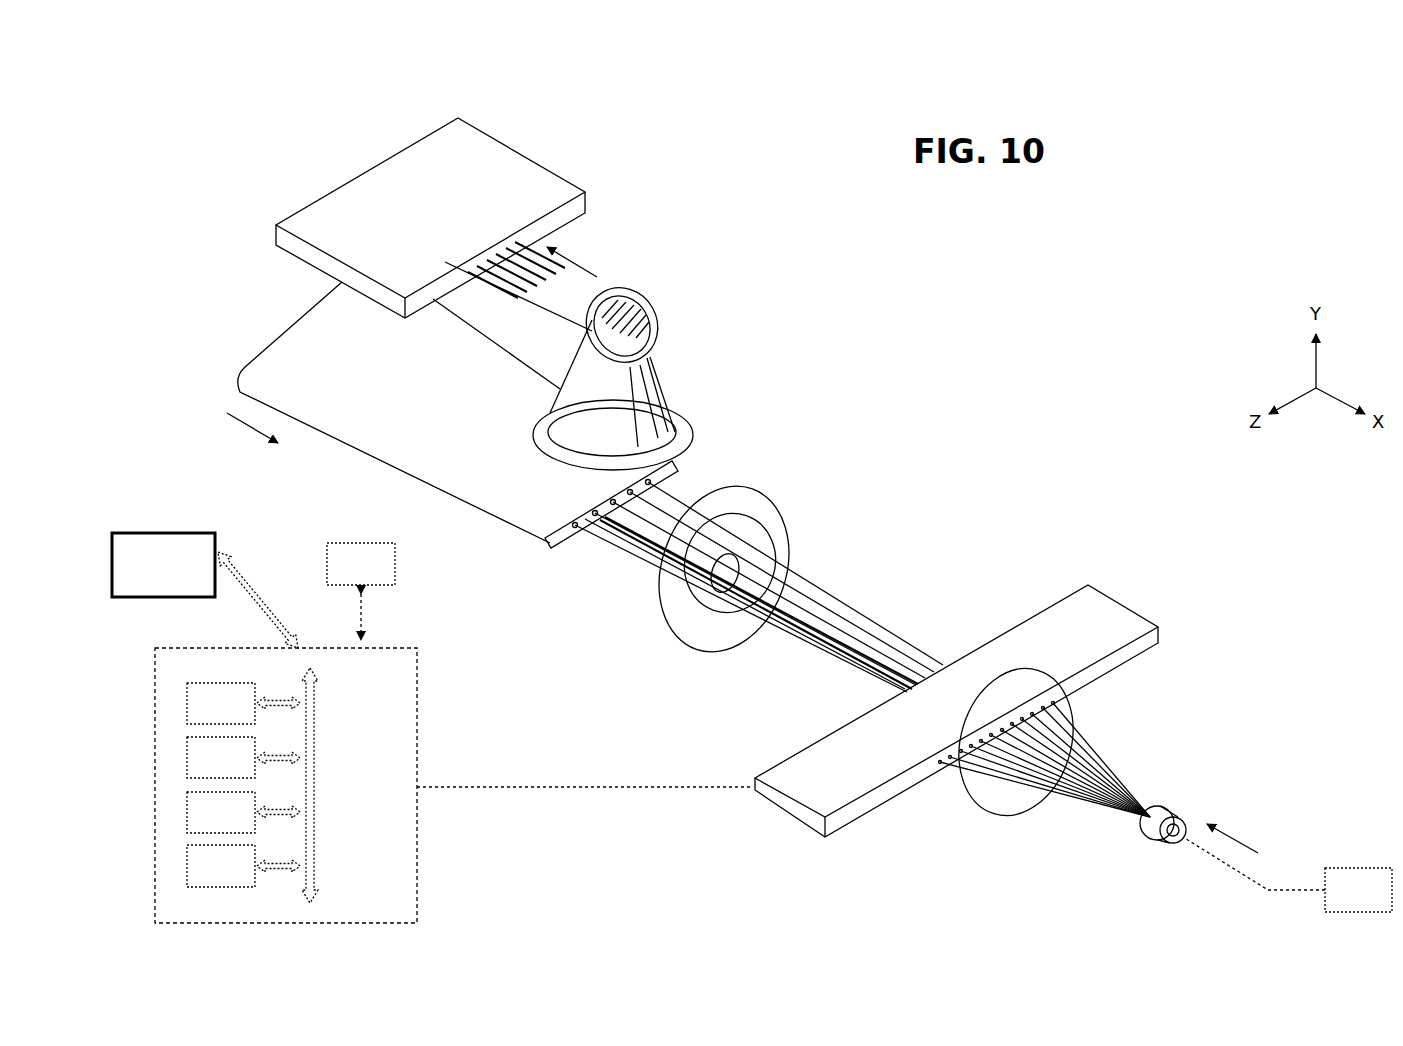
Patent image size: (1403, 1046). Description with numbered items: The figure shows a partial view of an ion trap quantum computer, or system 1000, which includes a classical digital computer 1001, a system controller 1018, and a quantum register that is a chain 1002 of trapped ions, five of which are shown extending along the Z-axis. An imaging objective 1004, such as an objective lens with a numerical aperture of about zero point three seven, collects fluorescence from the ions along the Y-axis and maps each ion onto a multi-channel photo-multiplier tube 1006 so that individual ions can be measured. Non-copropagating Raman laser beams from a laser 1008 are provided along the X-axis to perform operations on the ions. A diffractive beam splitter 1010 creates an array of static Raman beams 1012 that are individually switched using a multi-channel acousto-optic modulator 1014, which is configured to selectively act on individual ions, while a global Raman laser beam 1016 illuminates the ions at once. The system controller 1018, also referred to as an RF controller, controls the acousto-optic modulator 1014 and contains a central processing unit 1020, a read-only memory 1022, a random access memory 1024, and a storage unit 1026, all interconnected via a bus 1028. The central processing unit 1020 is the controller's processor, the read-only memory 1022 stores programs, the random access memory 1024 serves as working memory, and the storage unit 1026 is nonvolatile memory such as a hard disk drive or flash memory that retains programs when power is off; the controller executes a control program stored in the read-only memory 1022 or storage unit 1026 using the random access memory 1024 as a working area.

The system 1000 is at (914, 404).
The classical computer 1001 is at (207, 593).
The chain of trapped ions 1002 is at (592, 553).
The imaging objective 1004 is at (666, 366).
The multi-channel photo-multiplier tube 1006 is at (524, 155).
The laser 1008 is at (1287, 874).
The diffractive beam splitter 1010 is at (1165, 805).
The array of static Raman beams 1012 is at (680, 652).
The multi-channel acousto-optic modulator 1014 is at (1128, 602).
The global Raman laser beam 1016 is at (300, 473).
The system controller 1018 is at (243, 648).
The central processing unit 1020 is at (243, 703).
The read-only memory 1022 is at (243, 757).
The random access memory 1024 is at (243, 812).
The storage unit 1026 is at (291, 715).
The bus 1028 is at (318, 787).